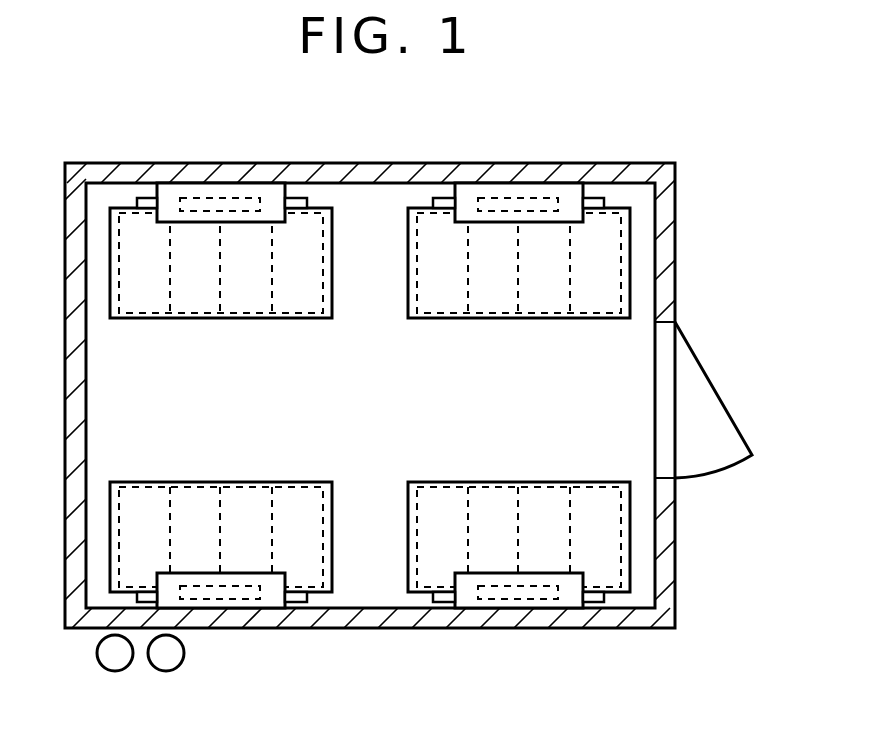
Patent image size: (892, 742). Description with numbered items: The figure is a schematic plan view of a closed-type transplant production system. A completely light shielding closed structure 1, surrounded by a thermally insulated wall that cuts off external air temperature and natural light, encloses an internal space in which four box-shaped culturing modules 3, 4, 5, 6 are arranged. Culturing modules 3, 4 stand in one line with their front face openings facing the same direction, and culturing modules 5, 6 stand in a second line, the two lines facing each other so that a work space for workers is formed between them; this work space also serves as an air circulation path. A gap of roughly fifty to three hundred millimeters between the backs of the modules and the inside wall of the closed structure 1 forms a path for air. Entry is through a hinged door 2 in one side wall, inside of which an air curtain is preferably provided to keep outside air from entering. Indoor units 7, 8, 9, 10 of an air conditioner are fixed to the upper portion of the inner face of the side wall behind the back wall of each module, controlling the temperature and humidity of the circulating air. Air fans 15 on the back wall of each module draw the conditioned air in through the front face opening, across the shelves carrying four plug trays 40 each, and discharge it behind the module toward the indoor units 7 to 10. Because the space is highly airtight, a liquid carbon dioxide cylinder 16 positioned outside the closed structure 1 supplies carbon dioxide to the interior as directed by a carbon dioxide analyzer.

The closed structure 1 is at (386, 163).
The hinged door 2 is at (712, 382).
The culturing module 3 is at (221, 307).
The culturing module 4 is at (457, 328).
The culturing module 5 is at (292, 479).
The culturing module 6 is at (458, 479).
The indoor unit 7 is at (173, 193).
The indoor unit 8 is at (517, 193).
The indoor unit 9 is at (263, 598).
The indoor unit 10 is at (563, 598).
The air fan 15 is at (147, 203).
The liquid carbon dioxide cylinder 16 is at (115, 660).
The plug tray 40 is at (198, 290).